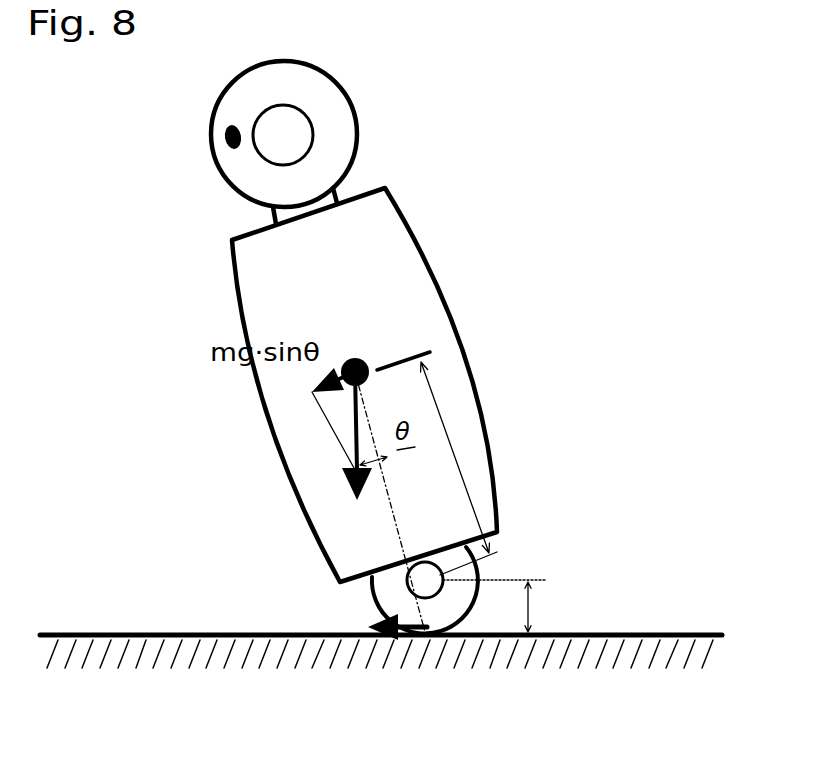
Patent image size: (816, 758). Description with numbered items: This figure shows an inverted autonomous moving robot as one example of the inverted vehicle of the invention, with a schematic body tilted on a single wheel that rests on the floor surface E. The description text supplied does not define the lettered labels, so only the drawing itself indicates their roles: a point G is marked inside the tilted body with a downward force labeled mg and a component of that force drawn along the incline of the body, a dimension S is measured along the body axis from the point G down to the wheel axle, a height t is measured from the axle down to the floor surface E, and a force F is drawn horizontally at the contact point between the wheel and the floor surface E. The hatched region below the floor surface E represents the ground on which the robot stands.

The floor surface E is at (655, 632).
The center of gravity G is at (371, 358).
The distance from axle to center of gravity S is at (437, 463).
The axle height above floor t is at (503, 606).
The floor friction force F is at (384, 617).
The gravity force mg is at (360, 457).